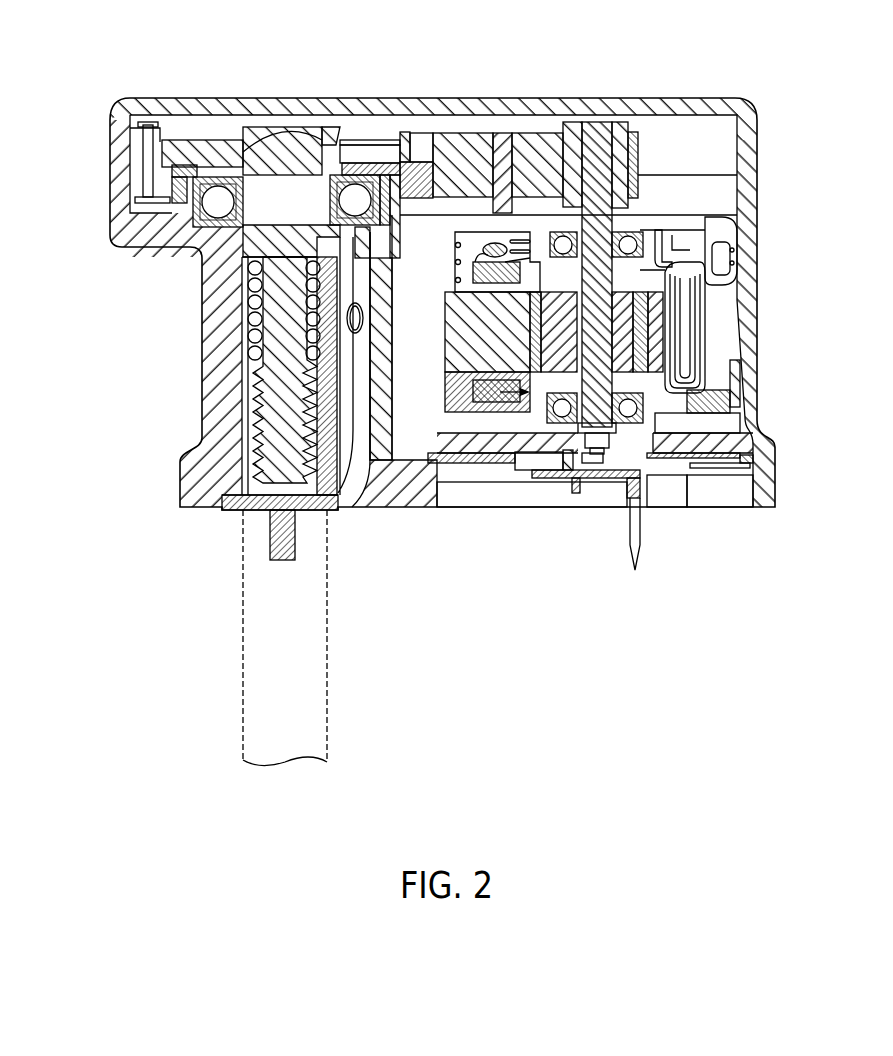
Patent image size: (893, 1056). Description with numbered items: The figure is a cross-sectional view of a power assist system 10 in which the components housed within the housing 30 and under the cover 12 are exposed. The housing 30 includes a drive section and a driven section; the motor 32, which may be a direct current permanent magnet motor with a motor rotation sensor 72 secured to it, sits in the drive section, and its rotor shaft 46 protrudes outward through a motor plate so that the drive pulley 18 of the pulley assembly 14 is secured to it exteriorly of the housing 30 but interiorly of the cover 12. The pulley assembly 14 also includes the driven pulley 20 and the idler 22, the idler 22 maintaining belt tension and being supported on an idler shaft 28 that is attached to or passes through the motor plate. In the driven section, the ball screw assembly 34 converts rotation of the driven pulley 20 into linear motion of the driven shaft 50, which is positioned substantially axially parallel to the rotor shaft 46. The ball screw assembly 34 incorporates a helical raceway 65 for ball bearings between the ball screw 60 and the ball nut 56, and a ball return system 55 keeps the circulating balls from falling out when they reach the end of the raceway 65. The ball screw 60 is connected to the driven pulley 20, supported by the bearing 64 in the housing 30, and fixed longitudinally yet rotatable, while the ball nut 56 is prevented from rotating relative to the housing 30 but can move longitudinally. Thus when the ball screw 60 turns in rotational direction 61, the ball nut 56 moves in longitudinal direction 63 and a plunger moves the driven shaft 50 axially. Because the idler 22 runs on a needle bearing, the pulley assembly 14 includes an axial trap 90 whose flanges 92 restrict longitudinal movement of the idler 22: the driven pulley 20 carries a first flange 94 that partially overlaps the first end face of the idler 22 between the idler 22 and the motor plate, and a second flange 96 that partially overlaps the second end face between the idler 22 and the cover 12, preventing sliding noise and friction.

The actuator assembly 10 is at (106, 86).
The cover 12 is at (703, 105).
The pulley assembly 14 is at (164, 157).
The drive pulley 18 is at (600, 137).
The driven pulley 20 is at (200, 145).
The idler 22 is at (502, 136).
The idler shaft 28 is at (570, 137).
The housing 30 is at (752, 262).
The motor 32 is at (665, 333).
The ball screw assembly 34 is at (253, 343).
The rotor shaft 46 is at (618, 135).
The driven shaft 50 is at (250, 626).
The ball return system 55 is at (363, 327).
The ball nut 56 is at (248, 400).
The ball screw 60 is at (282, 280).
The rotational direction 61 is at (288, 140).
The longitudinal direction 63 is at (284, 527).
The bearing 64 is at (200, 206).
The helical raceway 65 is at (253, 307).
The motor rotation sensor 72 is at (603, 478).
The axial trap 90 is at (437, 133).
The flanges 92 is at (372, 146).
The first flange 94 is at (437, 200).
The second flange 96 is at (462, 133).